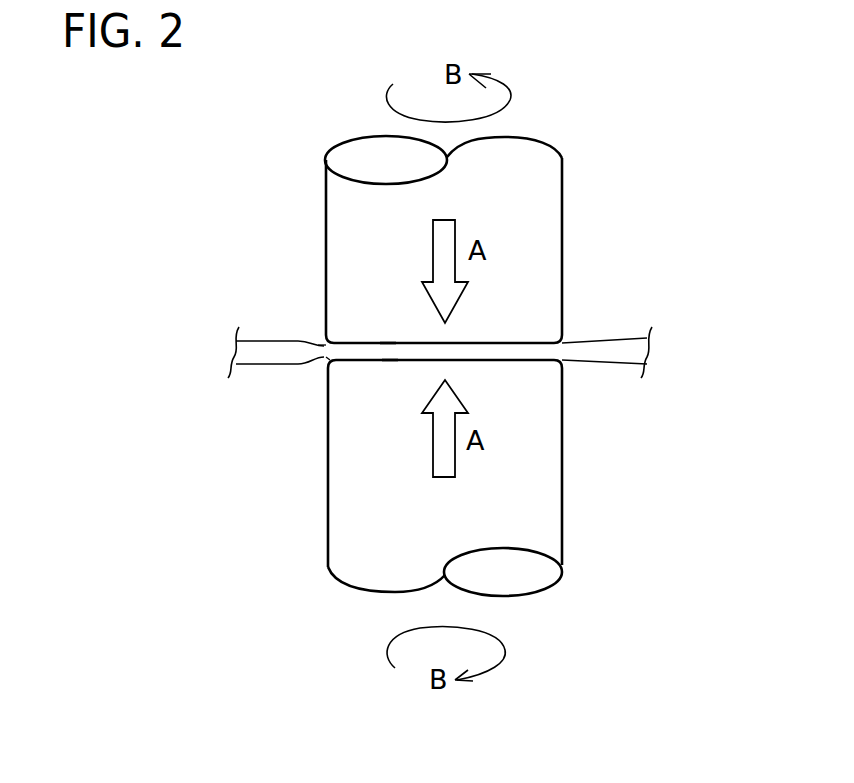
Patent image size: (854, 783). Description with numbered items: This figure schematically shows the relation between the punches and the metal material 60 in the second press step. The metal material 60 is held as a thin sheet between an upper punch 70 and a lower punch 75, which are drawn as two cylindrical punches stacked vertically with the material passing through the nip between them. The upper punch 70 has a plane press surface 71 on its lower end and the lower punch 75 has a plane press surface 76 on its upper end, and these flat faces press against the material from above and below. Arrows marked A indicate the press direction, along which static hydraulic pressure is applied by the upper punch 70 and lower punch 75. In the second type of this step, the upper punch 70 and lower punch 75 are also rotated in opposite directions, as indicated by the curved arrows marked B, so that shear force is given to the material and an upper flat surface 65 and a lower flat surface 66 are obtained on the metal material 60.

The metal material 60 is at (618, 333).
The upper flat surface 65 is at (388, 343).
The lower flat surface 66 is at (390, 361).
The upper punch 70 is at (575, 237).
The plane press surface 71 is at (318, 345).
The lower punch 75 is at (576, 455).
The plane press surface 76 is at (326, 357).